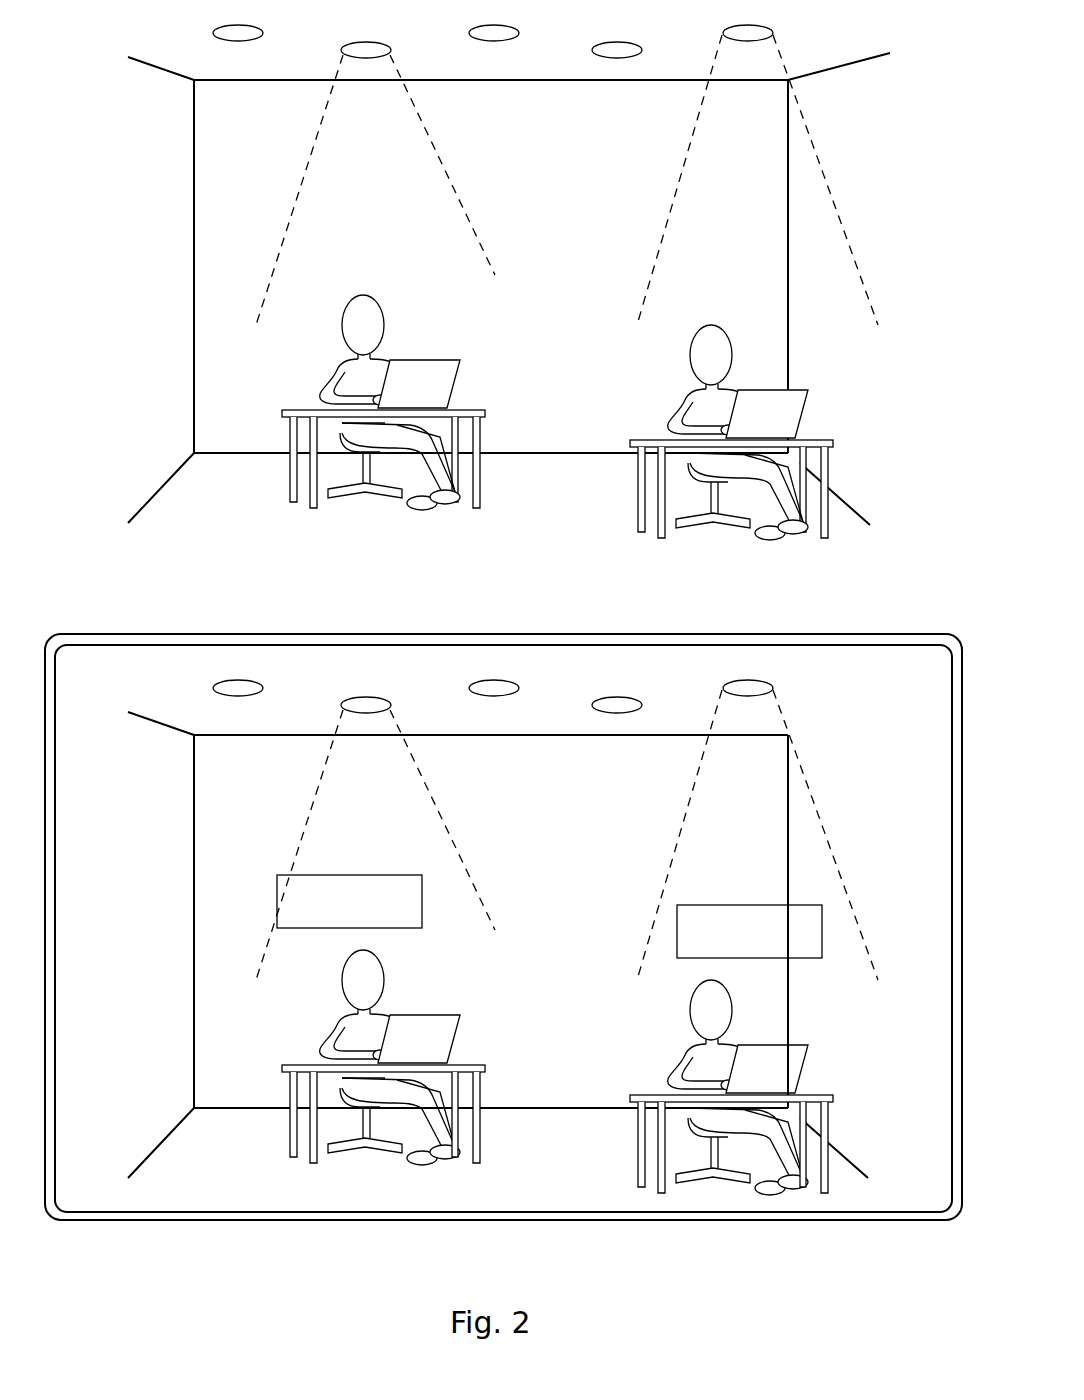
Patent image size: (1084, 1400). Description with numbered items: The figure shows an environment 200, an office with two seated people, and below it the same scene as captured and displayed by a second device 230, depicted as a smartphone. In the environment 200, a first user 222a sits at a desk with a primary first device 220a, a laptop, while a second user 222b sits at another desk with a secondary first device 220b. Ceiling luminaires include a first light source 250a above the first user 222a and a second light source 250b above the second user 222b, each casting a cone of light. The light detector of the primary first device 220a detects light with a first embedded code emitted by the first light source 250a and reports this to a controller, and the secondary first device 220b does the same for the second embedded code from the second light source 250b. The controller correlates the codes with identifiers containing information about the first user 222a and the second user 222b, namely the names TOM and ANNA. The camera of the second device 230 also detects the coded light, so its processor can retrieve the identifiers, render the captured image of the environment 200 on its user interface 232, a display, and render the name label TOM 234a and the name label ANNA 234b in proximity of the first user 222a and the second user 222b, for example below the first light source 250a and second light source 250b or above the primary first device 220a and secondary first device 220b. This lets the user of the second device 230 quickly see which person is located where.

The environment 200 is at (552, 582).
The primary first device 220a is at (440, 380).
The secondary first device 220b is at (788, 410).
The first user 222a is at (377, 325).
The second user 222b is at (725, 350).
The first light source 250a is at (366, 55).
The second light source 250b is at (748, 36).
The second device 230 is at (220, 1222).
The user interface 232 is at (100, 1200).
The name label TOM 234a is at (277, 911).
The name label ANNA 234b is at (677, 931).